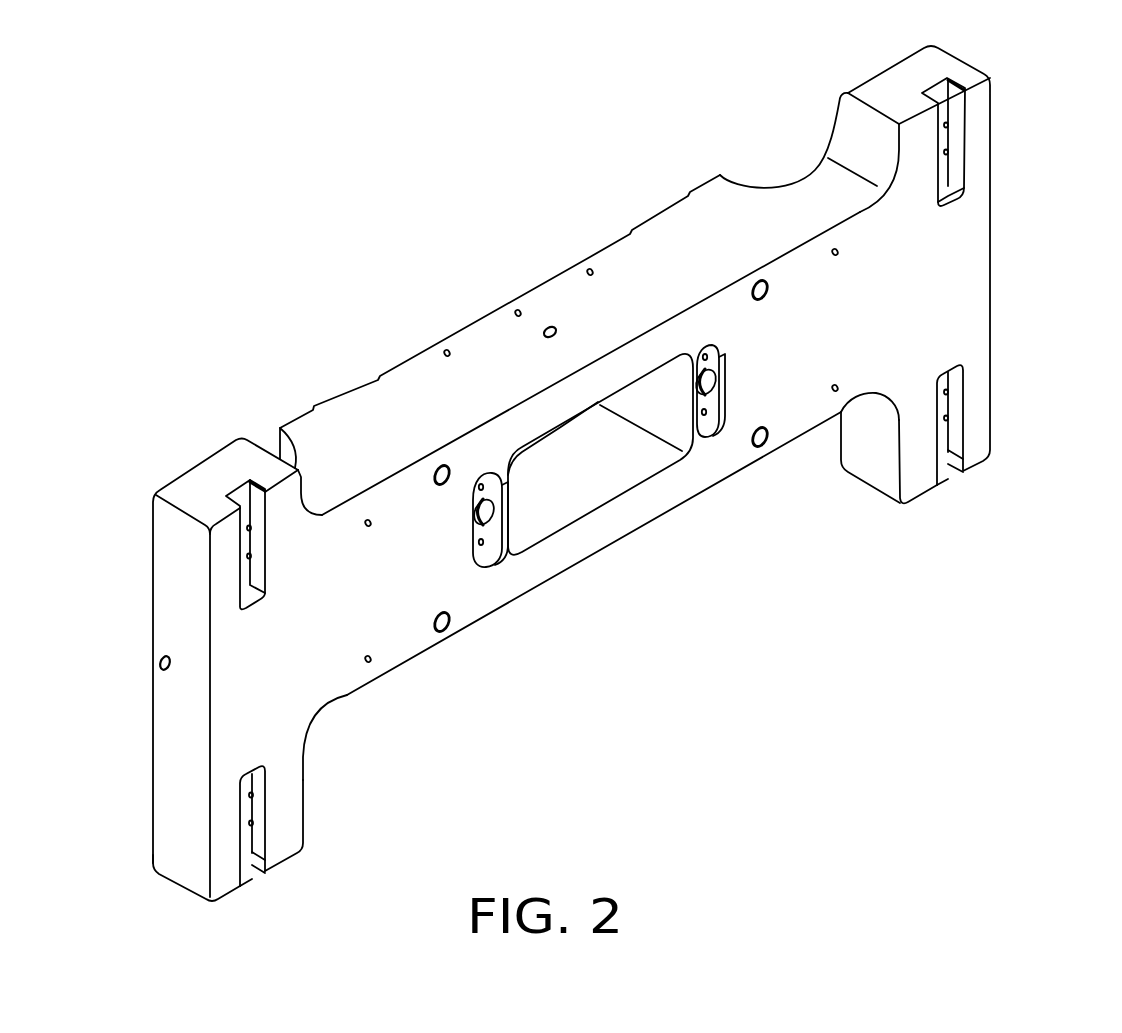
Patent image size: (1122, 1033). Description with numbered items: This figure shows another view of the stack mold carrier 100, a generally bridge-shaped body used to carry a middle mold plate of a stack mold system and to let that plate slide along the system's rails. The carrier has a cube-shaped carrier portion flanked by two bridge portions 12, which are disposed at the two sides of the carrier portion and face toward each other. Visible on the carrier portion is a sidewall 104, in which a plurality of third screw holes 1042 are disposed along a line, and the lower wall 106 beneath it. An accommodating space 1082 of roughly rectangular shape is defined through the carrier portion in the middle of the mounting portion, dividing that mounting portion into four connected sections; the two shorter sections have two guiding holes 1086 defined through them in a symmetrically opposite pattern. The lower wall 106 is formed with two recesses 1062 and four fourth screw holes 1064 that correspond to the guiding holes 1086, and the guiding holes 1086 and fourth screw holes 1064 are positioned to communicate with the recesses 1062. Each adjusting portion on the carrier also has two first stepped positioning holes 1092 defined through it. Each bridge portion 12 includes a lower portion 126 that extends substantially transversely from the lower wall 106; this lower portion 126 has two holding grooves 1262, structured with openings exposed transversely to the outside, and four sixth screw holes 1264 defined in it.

The stack mold carrier 100 is at (626, 473).
The bridge portion 12 is at (910, 274).
The sidewall 104 is at (500, 310).
The third screw holes 1042 is at (447, 351).
The lower wall 106 is at (591, 470).
The recesses 1062 is at (497, 510).
The fourth screw holes 1064 is at (482, 547).
The accommodating space 1082 is at (603, 480).
The guiding holes 1086 is at (518, 560).
The first stepped positioning holes 1092 is at (445, 634).
The lower portion 126 is at (963, 212).
The holding grooves 1262 is at (955, 442).
The sixth screw holes 1264 is at (947, 391).